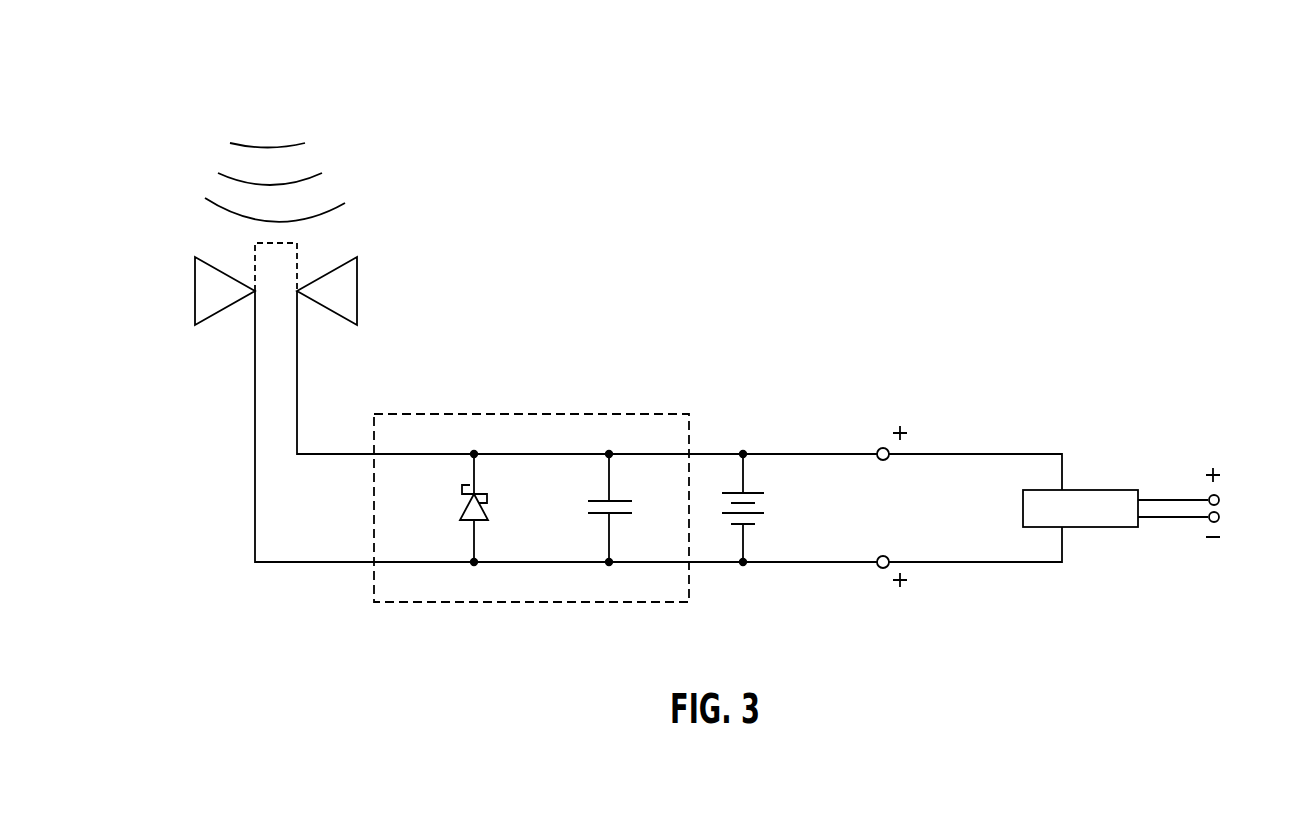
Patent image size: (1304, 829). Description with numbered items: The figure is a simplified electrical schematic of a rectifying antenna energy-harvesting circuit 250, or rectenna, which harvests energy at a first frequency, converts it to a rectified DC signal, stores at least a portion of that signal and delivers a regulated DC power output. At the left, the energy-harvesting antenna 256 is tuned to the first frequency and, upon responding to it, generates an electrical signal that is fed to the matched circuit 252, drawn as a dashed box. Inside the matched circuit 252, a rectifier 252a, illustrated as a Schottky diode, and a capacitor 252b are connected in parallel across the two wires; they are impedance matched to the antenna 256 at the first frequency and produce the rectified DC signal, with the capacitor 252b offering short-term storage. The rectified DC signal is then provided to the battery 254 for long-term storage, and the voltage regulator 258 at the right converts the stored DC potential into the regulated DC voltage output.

The rectifying antenna energy-harvesting circuit 250 is at (893, 317).
The matched circuit 252 is at (543, 413).
The rectifier D1 252a is at (462, 511).
The capacitor C1 252b is at (590, 509).
The battery 254 is at (767, 510).
The energy-harvesting antenna 256 is at (241, 314).
The voltage regulator 258 is at (1101, 490).